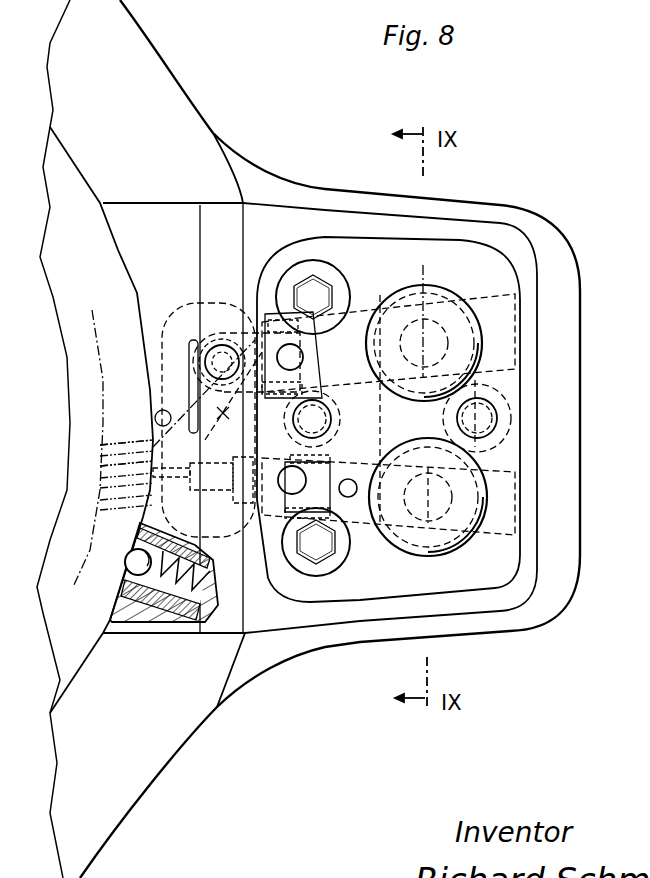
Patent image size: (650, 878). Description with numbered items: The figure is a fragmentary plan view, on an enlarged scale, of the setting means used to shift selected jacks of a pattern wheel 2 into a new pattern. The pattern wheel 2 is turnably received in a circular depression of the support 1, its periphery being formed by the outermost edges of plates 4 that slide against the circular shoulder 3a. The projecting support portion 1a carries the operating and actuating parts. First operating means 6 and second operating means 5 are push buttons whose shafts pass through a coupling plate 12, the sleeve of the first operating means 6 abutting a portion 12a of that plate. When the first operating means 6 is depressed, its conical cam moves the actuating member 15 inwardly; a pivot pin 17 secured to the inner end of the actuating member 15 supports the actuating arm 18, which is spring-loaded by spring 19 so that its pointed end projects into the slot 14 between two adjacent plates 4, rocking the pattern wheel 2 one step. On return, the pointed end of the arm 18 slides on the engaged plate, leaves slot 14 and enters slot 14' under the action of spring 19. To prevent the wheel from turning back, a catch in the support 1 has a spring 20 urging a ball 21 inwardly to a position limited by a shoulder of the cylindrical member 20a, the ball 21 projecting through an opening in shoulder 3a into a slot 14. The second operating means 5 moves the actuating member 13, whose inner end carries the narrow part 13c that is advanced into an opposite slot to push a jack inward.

The support 1 is at (165, 800).
The support portion 1a is at (550, 600).
The pattern wheel 2 is at (100, 353).
The circular shoulder 3a is at (119, 247).
The plates 4 is at (128, 441).
The second operating means 5 is at (460, 553).
The first operating means 6 is at (450, 289).
The coupling plate 12 is at (388, 412).
The coupling plate portion 12a is at (419, 312).
The actuating member 13 is at (360, 520).
The narrow part 13c is at (178, 478).
The slot 14 is at (110, 475).
The slot 14' is at (111, 446).
The actuating member 15 is at (355, 323).
The pivot pin 17 is at (219, 348).
The actuating arm 18 is at (222, 419).
The spring 19 is at (185, 418).
The spring 20 is at (187, 613).
The cylindrical member 20a is at (168, 612).
The ball 21 is at (128, 562).